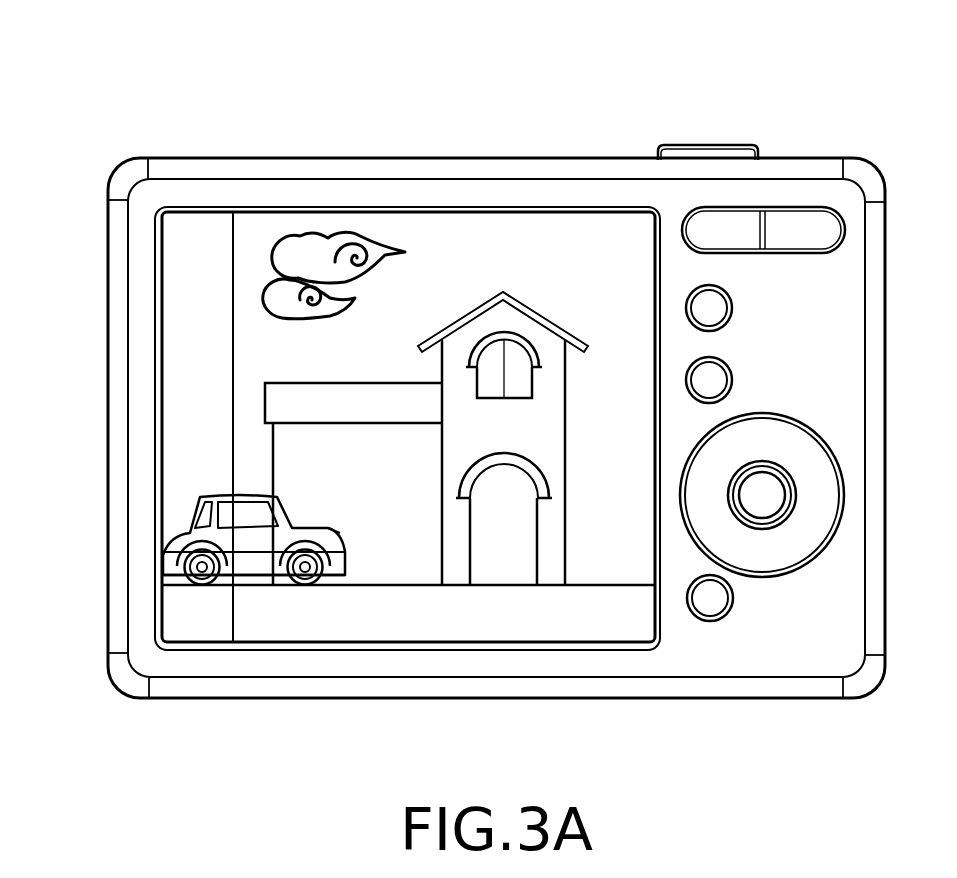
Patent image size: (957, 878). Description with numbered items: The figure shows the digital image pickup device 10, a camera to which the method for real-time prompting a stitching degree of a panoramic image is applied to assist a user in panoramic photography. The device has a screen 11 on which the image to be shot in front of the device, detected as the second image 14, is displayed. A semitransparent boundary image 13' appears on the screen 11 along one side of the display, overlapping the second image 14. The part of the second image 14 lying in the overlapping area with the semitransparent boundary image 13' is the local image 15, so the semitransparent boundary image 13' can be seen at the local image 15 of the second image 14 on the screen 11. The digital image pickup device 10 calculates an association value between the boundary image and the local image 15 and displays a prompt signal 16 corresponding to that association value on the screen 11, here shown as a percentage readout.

The digital image pickup device 10 is at (184, 42).
The screen 11 is at (387, 212).
The semitransparent boundary image 13' is at (195, 368).
The second image 14 is at (457, 268).
The local image 15 is at (182, 348).
The prompt signal 16 is at (583, 228).